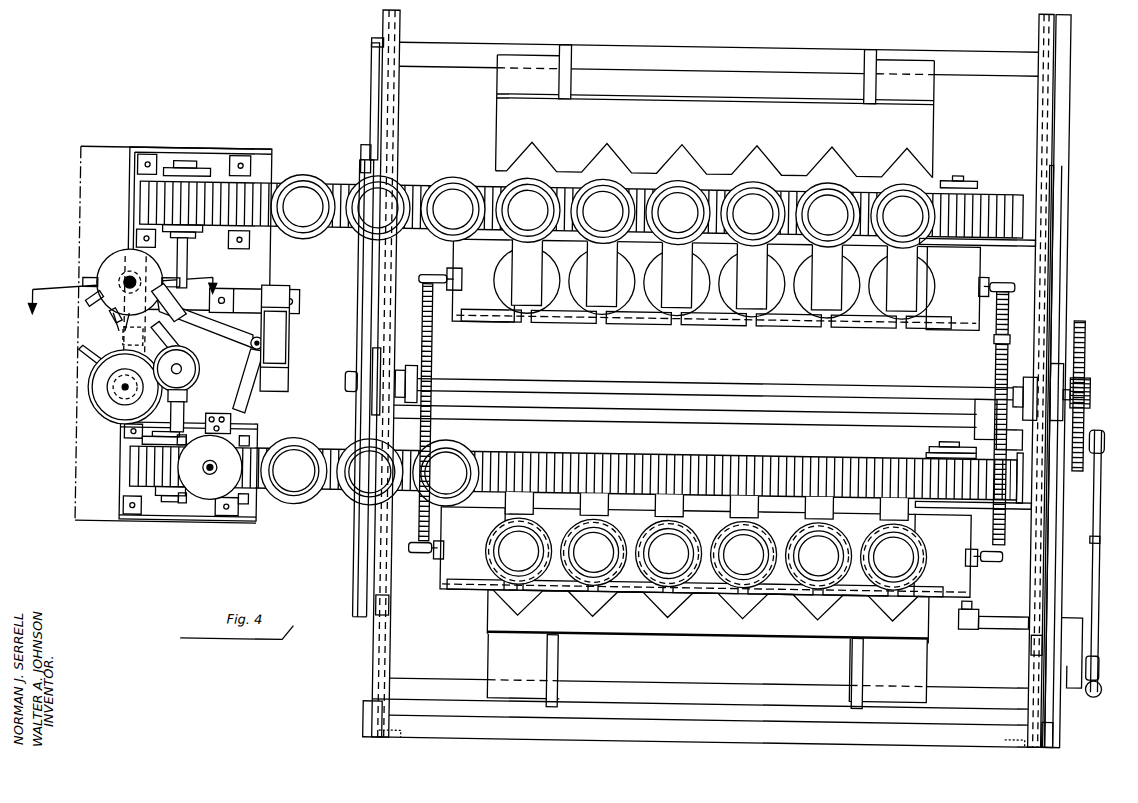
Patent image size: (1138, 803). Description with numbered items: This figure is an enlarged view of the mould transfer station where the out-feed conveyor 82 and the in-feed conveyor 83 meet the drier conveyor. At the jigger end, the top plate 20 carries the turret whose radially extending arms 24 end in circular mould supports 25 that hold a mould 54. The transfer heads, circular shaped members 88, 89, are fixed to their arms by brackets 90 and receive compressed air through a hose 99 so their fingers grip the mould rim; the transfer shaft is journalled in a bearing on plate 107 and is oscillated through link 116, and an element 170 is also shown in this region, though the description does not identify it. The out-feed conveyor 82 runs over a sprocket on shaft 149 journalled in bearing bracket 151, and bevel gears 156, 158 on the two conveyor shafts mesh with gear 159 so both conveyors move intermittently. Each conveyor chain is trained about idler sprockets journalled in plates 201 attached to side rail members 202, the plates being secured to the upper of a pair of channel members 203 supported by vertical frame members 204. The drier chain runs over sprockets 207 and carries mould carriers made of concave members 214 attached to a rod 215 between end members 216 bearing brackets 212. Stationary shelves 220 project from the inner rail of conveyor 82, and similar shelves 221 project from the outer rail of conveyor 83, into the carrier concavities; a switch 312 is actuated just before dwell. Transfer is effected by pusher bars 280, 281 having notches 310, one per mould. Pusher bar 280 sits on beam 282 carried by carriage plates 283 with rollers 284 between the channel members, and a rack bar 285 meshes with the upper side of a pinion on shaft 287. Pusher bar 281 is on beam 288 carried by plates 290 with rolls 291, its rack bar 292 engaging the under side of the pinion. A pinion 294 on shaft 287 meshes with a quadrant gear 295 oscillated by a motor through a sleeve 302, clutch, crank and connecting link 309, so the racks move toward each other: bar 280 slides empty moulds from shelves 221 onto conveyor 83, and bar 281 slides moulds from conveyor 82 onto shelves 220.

The top plate 20 is at (173, 334).
The radially extending arm 24 is at (82, 370).
The circular mould support 25 is at (118, 420).
The mould 54 is at (470, 172).
The out-feed conveyor 82 is at (296, 183).
The in-feed conveyor 83 is at (131, 472).
The circular shaped member 88 is at (112, 272).
The circular shaped member 89 is at (214, 511).
The bracket 90 is at (206, 422).
The hose 99 is at (110, 334).
The plate 107 is at (289, 361).
The link 116 is at (164, 296).
The shaft 149 is at (185, 278).
The bearing bracket 151 is at (172, 432).
The bevel gear 156 is at (189, 404).
The bevel gear 158 is at (176, 344).
The gear 159 is at (199, 377).
The shaft 170 is at (132, 408).
The plate 201 is at (1032, 240).
The side rail member 202 is at (486, 189).
The channel member 203 is at (1028, 332).
The vertical frame member 204 is at (1000, 532).
The sprocket 207 is at (432, 375).
The bracket 212 is at (452, 272).
The carrier member 214 is at (720, 310).
The rod 215 is at (750, 325).
The end member 216 is at (711, 418).
The stationary shelf 220 is at (714, 280).
The shelf 221 is at (680, 505).
The pusher bar 280 is at (1064, 74).
The pusher bar 281 is at (715, 111).
The beam 282 is at (974, 686).
The plate 283 is at (376, 712).
The roller 284 is at (393, 612).
The rack bar 285 is at (356, 555).
The shaft 287 is at (715, 388).
The beam 288 is at (718, 57).
The plate 290 is at (366, 47).
The roll 291 is at (396, 46).
The rack bar 292 is at (357, 168).
The pinion 294 is at (1090, 392).
The gear or quadrant 295 is at (1084, 326).
The sleeve 302 is at (1076, 608).
The connecting link 309 is at (1100, 592).
The notch 310 is at (758, 167).
The switch 312 is at (962, 612).